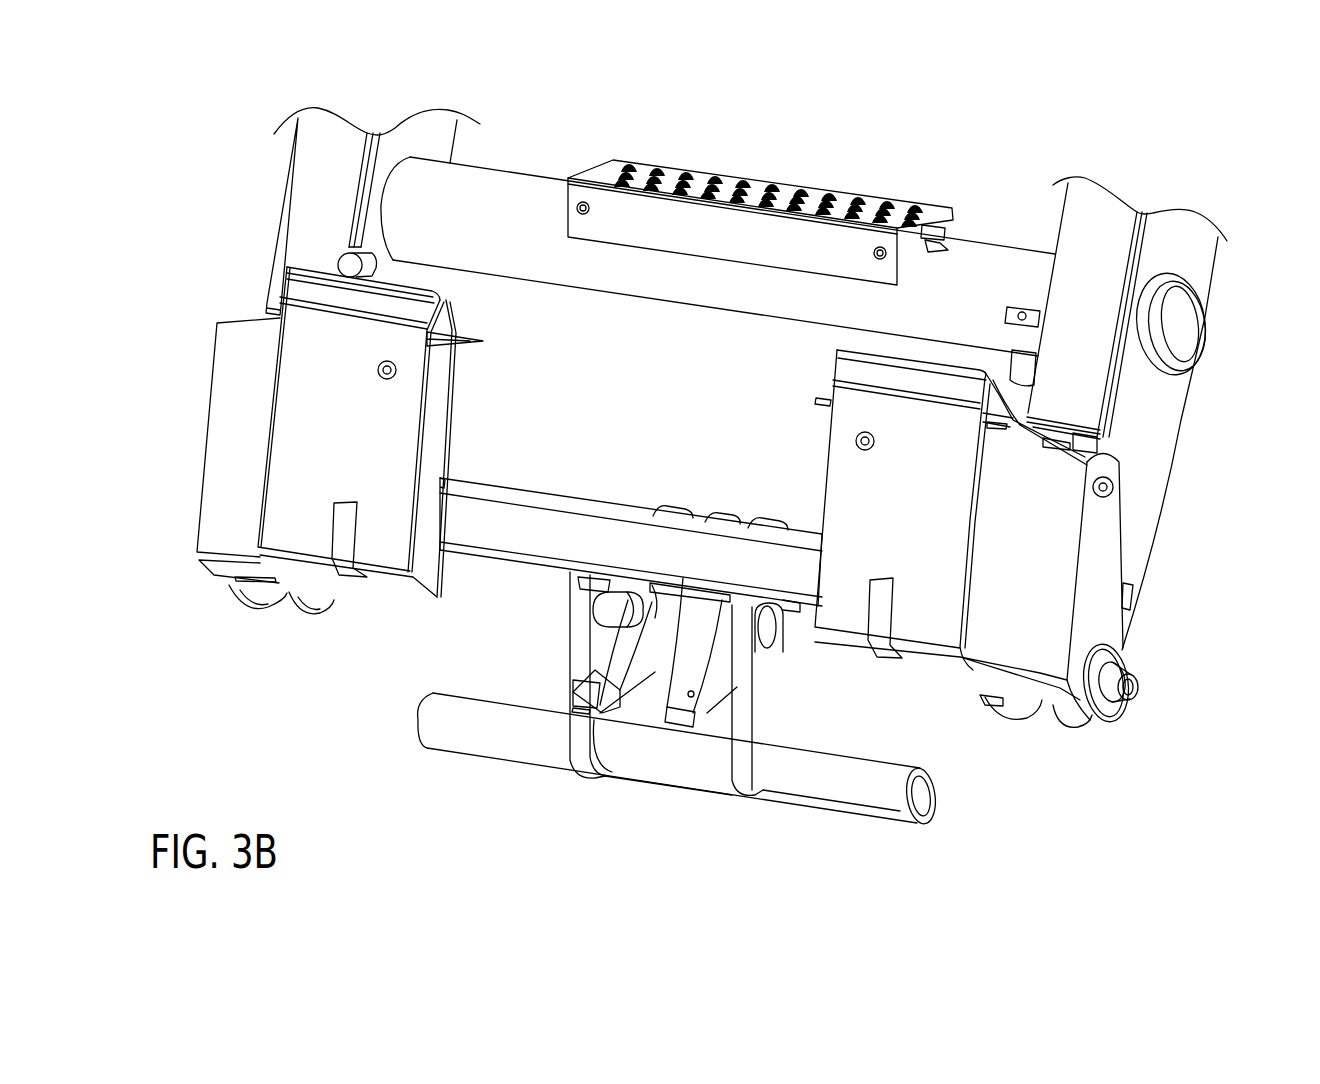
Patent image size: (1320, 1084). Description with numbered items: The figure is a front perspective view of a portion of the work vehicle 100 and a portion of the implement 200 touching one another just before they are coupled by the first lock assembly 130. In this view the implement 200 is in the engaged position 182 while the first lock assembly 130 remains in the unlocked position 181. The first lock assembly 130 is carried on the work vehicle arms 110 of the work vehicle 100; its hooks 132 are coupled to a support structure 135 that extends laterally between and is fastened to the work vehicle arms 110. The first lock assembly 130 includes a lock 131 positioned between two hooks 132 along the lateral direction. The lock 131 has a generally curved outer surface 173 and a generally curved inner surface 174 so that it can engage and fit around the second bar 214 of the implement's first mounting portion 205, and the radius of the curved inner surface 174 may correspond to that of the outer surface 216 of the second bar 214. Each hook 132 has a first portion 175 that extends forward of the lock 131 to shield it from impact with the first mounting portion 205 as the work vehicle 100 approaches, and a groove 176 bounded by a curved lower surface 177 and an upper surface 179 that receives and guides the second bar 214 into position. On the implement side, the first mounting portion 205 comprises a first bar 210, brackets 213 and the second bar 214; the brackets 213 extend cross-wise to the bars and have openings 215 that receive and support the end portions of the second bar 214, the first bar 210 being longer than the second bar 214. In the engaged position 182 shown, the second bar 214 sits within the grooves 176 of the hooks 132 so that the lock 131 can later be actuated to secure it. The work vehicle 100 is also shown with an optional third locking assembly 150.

The work vehicle 100 is at (1160, 589).
The work vehicle arms 110 is at (1160, 505).
The first lock assembly 130 is at (735, 675).
The lock 131 is at (635, 653).
The hooks 132 is at (590, 694).
The support structure 135 is at (656, 520).
The third locking assembly 150 is at (974, 551).
The curved outer surface 173 is at (657, 673).
The curved inner surface 174 is at (670, 655).
The first portion 175 is at (586, 713).
The groove 176 is at (749, 659).
The curved lower surface 177 is at (598, 670).
The upper surface 179 is at (657, 622).
The unlocked position 181 is at (829, 671).
The engaged position 182 is at (727, 787).
The implement 200 is at (929, 826).
The first mounting portion 205 is at (895, 839).
The first bar 210 is at (856, 805).
The brackets 213 is at (770, 727).
The second bar 214 is at (603, 604).
The openings 215 is at (791, 598).
The outer surface 216 is at (768, 624).